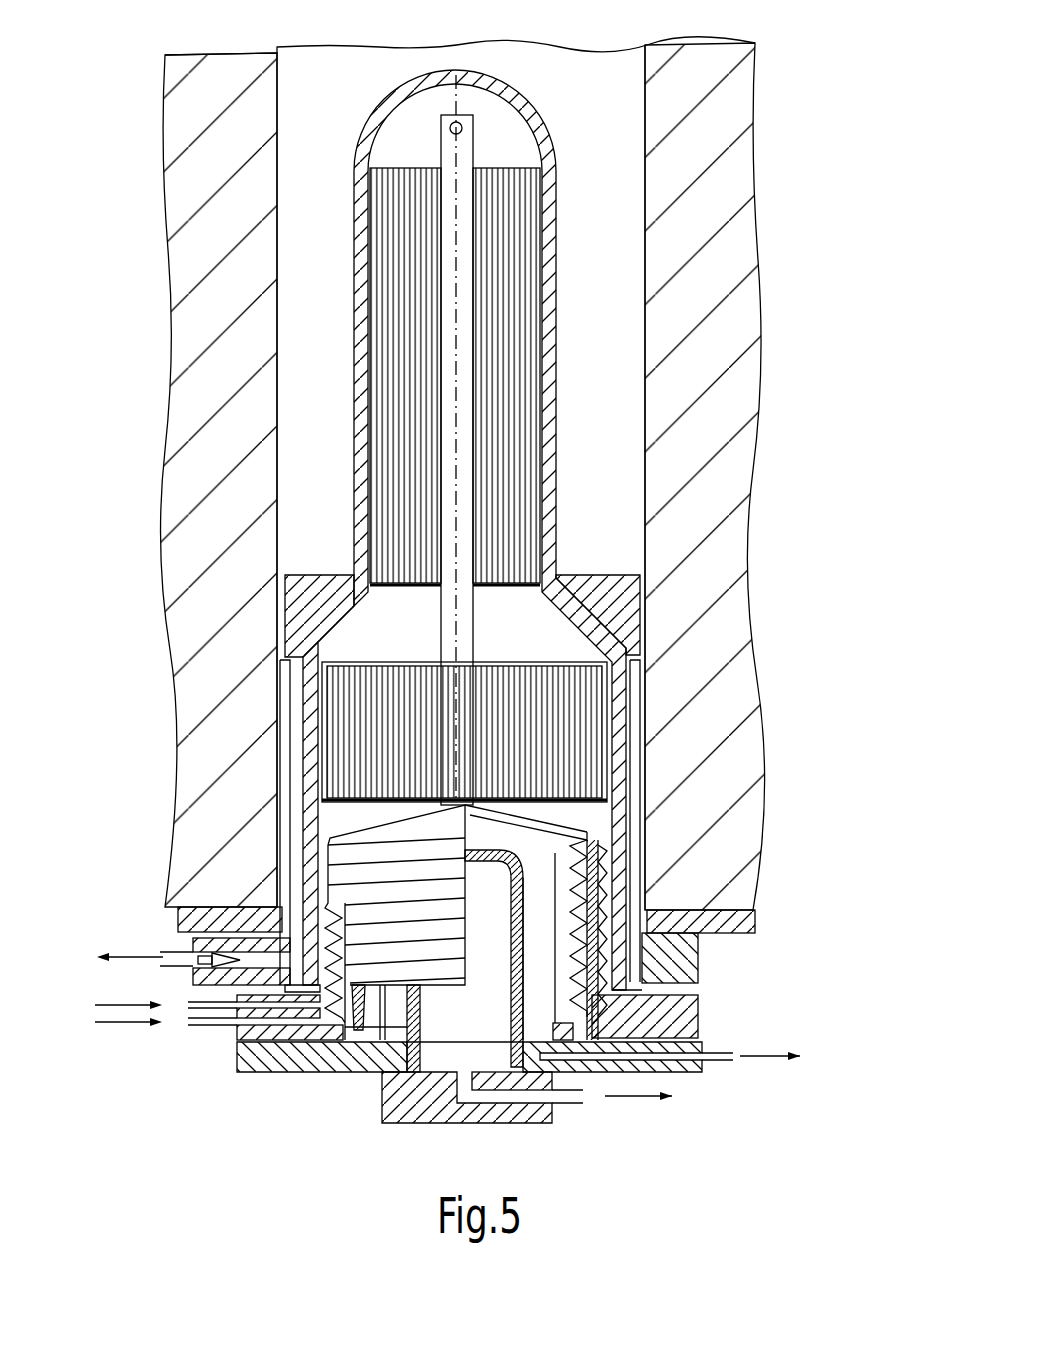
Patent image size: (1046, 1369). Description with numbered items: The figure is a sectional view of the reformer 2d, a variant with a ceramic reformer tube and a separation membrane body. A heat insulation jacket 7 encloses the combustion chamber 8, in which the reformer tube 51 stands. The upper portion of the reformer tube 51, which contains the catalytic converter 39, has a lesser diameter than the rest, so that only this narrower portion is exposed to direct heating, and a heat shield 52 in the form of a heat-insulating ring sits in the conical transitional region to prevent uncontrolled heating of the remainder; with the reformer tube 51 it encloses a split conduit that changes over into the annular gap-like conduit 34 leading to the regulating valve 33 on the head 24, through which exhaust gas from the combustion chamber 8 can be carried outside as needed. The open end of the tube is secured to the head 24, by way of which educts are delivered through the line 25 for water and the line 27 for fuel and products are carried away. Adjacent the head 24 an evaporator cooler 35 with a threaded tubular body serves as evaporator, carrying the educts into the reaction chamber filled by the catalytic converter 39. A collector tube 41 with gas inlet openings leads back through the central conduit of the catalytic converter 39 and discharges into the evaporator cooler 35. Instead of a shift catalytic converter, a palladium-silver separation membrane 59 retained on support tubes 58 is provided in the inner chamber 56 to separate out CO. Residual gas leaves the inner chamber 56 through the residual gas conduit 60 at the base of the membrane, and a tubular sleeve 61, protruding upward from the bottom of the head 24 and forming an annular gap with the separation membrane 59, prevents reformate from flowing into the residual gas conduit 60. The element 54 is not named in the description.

The reformer 2d is at (795, 152).
The heat insulation jacket 7 is at (717, 402).
The combustion chamber 8 is at (612, 473).
The head 24 is at (360, 1080).
The line 25 is at (207, 1030).
The line for fuel 27 is at (185, 1010).
The regulating valve 33 is at (183, 975).
The annular gap-like conduit 34 is at (615, 778).
The evaporator cooler 35 is at (592, 823).
The catalytic converter 39 is at (497, 263).
The collector tube 41 is at (477, 147).
The reformer tube 51 is at (560, 355).
The heat shield 52 is at (645, 603).
The lower filter element 54 is at (560, 733).
The inner chamber 56 is at (541, 867).
The support tube 58 is at (510, 950).
The separation membrane 59 is at (525, 958).
The residual gas conduit 60 is at (680, 1068).
The tubular sleeve 61 is at (555, 972).